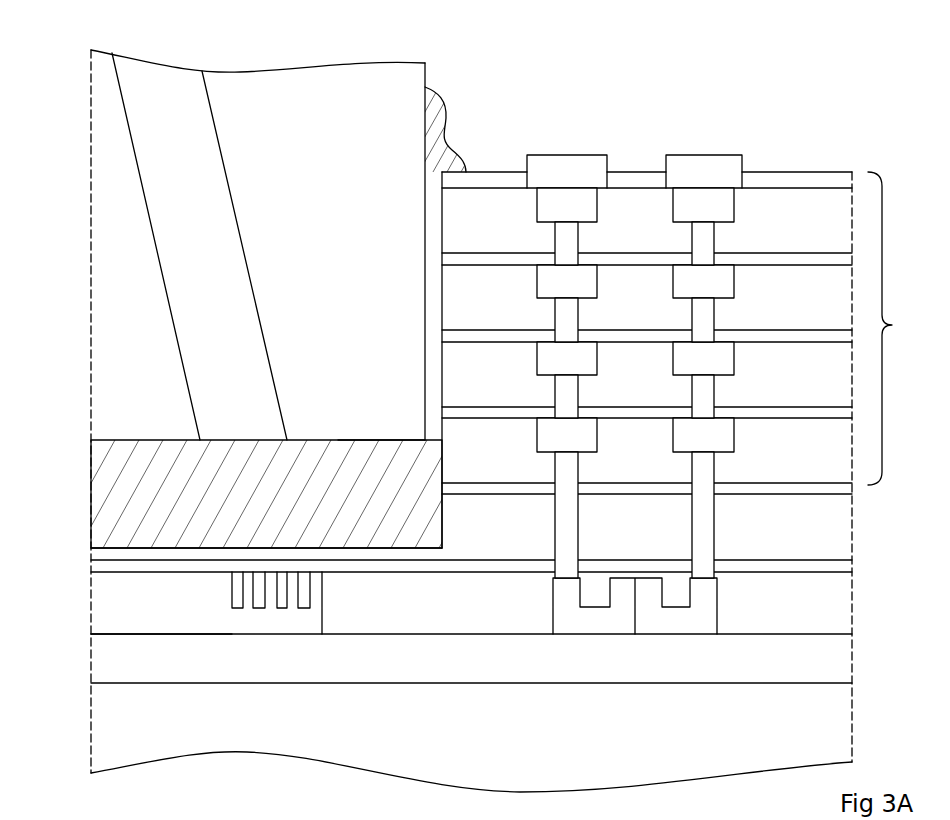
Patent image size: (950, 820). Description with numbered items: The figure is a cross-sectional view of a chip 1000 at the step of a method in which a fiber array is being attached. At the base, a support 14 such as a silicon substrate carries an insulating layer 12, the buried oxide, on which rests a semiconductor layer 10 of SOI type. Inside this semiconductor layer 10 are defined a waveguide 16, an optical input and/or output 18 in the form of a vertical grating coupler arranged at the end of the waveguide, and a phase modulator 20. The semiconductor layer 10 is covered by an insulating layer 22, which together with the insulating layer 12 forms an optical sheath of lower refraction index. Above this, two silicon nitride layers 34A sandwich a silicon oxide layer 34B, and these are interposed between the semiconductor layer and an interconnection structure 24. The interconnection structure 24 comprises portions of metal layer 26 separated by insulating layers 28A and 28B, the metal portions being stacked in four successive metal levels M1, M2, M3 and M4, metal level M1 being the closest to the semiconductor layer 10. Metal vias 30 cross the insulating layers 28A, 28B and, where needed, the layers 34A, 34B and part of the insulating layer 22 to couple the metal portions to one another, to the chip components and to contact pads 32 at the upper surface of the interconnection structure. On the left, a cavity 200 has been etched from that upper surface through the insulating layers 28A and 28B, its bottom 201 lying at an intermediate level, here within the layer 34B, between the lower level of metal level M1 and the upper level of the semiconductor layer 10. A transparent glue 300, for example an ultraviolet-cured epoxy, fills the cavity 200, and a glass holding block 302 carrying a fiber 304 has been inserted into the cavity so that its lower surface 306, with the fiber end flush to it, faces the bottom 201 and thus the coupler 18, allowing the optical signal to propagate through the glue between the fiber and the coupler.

The semiconductor layer 10 is at (84, 598).
The chip 1000 is at (816, 102).
The insulating layer 12 is at (834, 654).
The support 14 is at (834, 729).
The waveguide 16 is at (128, 624).
The optical input and/or output 18 is at (276, 624).
The phase modulator 20 is at (690, 625).
The insulating layer 22 is at (496, 625).
The interconnection structure 24 is at (890, 328).
The metal layer 26 is at (582, 207).
The insulating layer 28A is at (484, 172).
The insulating layer 28B is at (527, 219).
The metal via 30 is at (570, 242).
The contact pad 32 is at (572, 158).
The insulating layer 34A is at (826, 491).
The insulating layer 34B is at (826, 537).
The cavity 200 is at (436, 472).
The bottom 201 is at (163, 548).
The glue 300 is at (262, 511).
The holding block 302 is at (398, 70).
The fiber 304 is at (214, 264).
The surface 306 is at (340, 440).
The metal level M1 is at (748, 435).
The metal level M2 is at (748, 359).
The metal level M3 is at (748, 282).
The metal level M4 is at (748, 205).